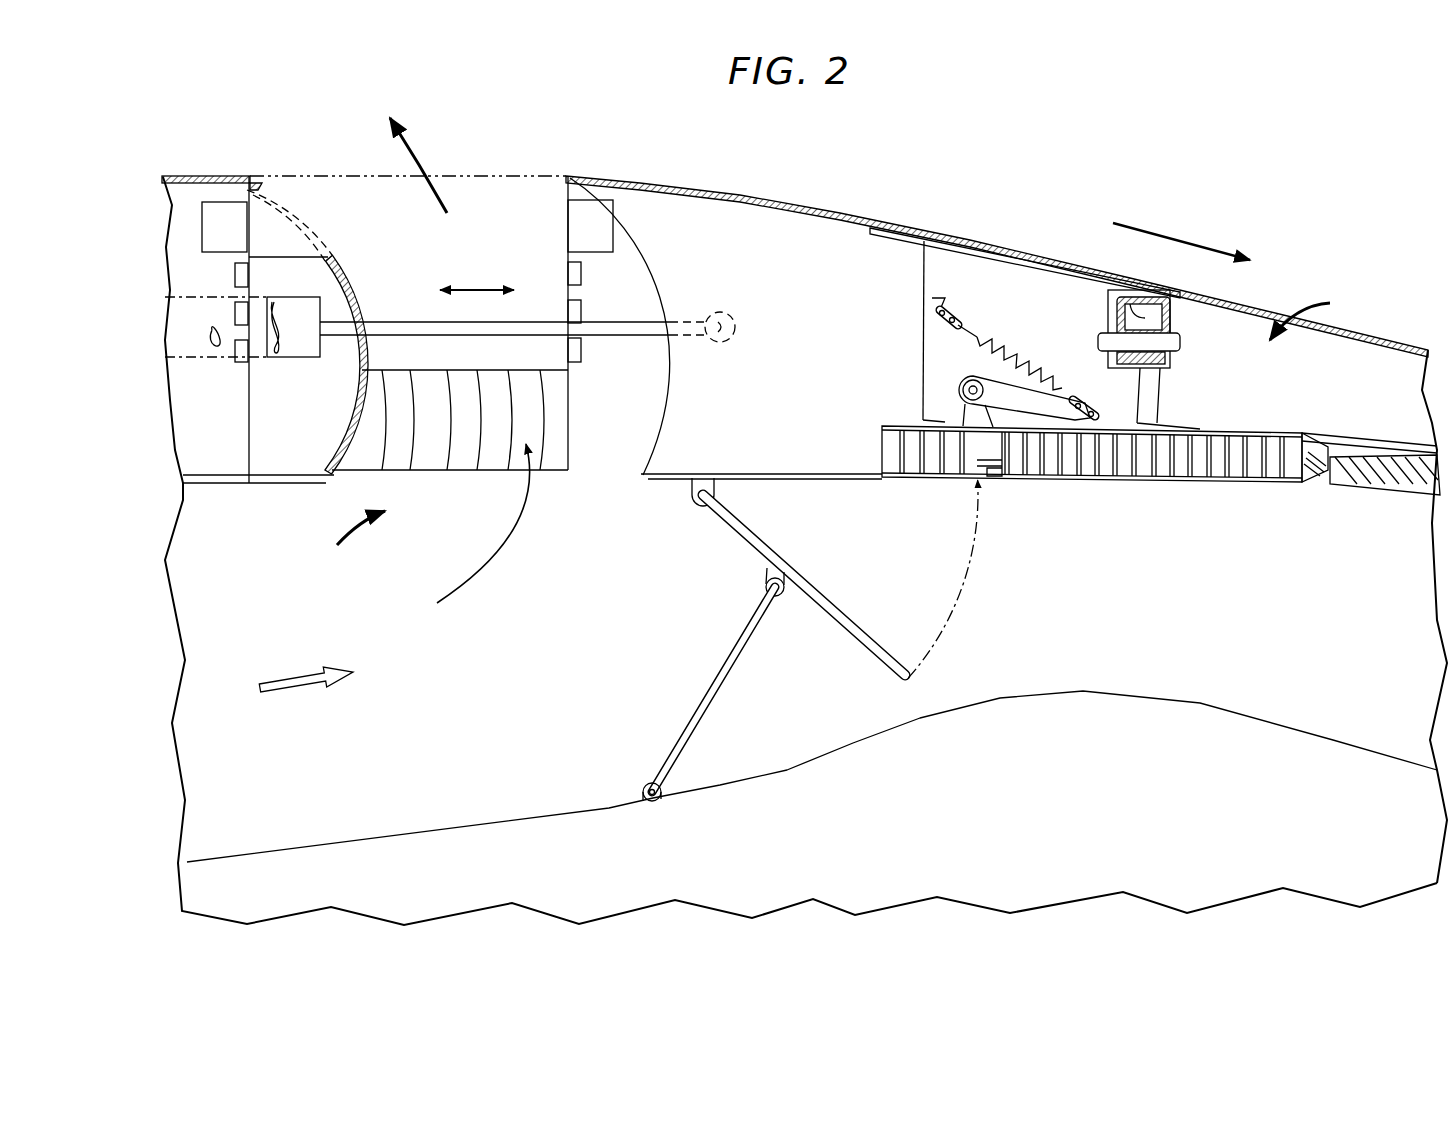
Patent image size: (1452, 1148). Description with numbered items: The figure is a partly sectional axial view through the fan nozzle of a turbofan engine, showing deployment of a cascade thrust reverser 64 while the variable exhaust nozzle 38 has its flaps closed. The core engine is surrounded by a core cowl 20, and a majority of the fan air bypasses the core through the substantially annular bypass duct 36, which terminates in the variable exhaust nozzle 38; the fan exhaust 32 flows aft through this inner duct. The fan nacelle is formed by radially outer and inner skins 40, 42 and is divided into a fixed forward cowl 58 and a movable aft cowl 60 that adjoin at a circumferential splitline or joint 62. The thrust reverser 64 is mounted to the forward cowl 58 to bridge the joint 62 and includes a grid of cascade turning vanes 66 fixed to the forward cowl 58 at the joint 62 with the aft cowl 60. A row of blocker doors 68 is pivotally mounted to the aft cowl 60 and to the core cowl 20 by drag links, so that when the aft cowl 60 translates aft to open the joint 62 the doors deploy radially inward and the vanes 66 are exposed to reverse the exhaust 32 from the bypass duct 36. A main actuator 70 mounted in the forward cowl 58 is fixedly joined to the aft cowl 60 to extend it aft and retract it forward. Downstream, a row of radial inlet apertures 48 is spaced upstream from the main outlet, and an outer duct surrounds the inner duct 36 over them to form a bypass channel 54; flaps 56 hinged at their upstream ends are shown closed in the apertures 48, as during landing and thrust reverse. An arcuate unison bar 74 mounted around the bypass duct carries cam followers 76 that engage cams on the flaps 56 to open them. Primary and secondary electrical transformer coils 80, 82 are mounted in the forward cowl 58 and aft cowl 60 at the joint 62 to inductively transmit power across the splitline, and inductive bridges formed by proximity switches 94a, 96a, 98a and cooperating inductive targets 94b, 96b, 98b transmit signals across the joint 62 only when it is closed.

The core cowl 20 is at (1118, 790).
The fan exhaust flow 32 is at (1197, 243).
The bypass duct 36 is at (578, 675).
The variable exhaust nozzle 38 is at (1315, 312).
The outer skin 40 is at (908, 222).
The inner skin 42 is at (883, 481).
The inlet apertures 48 is at (1305, 482).
The bypass channel 54 is at (1373, 407).
The flaps 56 is at (1263, 430).
The forward cowl 58 is at (281, 455).
The aft cowl 60 is at (726, 252).
The joint 62 is at (383, 242).
The thrust reverser 64 is at (415, 360).
The cascade turning vanes 66 is at (417, 460).
The blocker doors 68 is at (817, 617).
The main actuator 70 is at (312, 358).
The unison bar 74 is at (1145, 290).
The cam followers 76 is at (1110, 306).
The primary transformer coil 80 is at (212, 242).
The secondary transformer coil 82 is at (578, 241).
The proximity switch 94a is at (582, 275).
The inductive target 94b is at (235, 277).
The proximity switch 96a is at (237, 362).
The inductive target 96b is at (582, 350).
The proximity switch 98a is at (235, 313).
The inductive target 98b is at (582, 311).